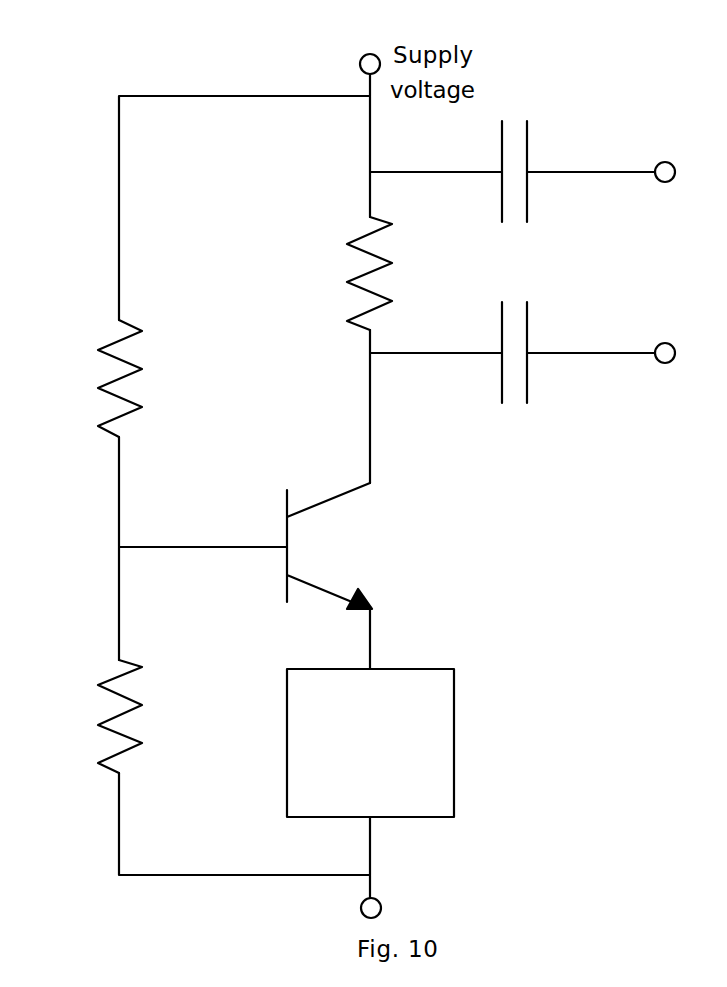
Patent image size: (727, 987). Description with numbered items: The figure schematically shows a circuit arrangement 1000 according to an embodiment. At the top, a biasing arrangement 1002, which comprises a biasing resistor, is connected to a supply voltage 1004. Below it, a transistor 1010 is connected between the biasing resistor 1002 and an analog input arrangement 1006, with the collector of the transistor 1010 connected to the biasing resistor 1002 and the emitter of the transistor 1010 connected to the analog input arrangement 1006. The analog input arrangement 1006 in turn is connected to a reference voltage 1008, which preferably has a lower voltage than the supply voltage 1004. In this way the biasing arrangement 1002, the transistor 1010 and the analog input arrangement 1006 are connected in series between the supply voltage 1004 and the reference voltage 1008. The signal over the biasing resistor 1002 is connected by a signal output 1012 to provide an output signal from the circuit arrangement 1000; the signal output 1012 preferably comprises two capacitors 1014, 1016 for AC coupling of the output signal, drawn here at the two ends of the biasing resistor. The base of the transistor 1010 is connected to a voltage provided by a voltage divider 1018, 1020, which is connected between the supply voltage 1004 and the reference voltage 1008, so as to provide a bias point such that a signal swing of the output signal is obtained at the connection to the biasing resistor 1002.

The circuit arrangement 1000 is at (514, 544).
The biasing arrangement 1002 is at (372, 265).
The supply voltage 1004 is at (362, 58).
The analog input arrangement 1006 is at (428, 778).
The reference voltage 1008 is at (372, 897).
The transistor 1010 is at (289, 560).
The signal output 1012 is at (695, 276).
The capacitor 1014 is at (517, 138).
The capacitor 1016 is at (517, 336).
The voltage divider resistor 1018 is at (122, 370).
The voltage divider resistor 1020 is at (122, 712).